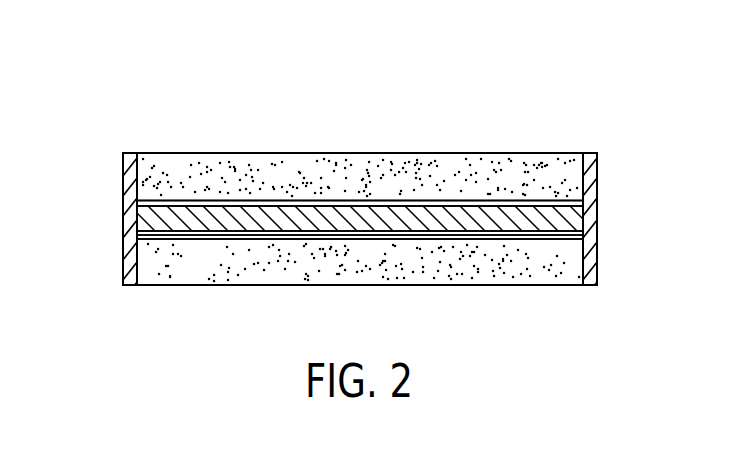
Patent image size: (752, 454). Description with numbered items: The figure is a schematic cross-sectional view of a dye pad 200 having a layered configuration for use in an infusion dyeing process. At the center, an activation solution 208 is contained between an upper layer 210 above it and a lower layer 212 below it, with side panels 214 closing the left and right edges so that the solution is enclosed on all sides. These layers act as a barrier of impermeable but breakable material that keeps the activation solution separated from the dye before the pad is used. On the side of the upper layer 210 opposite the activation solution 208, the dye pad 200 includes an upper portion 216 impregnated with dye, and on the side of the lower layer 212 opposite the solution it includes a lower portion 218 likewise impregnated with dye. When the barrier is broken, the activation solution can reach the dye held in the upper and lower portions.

The dye pad 200 is at (128, 78).
The activation solution 208 is at (442, 207).
The upper layer 210 is at (294, 201).
The lower layer 212 is at (192, 236).
The side panels 214 is at (592, 185).
The upper portion 216 is at (205, 167).
The lower portion 218 is at (502, 275).